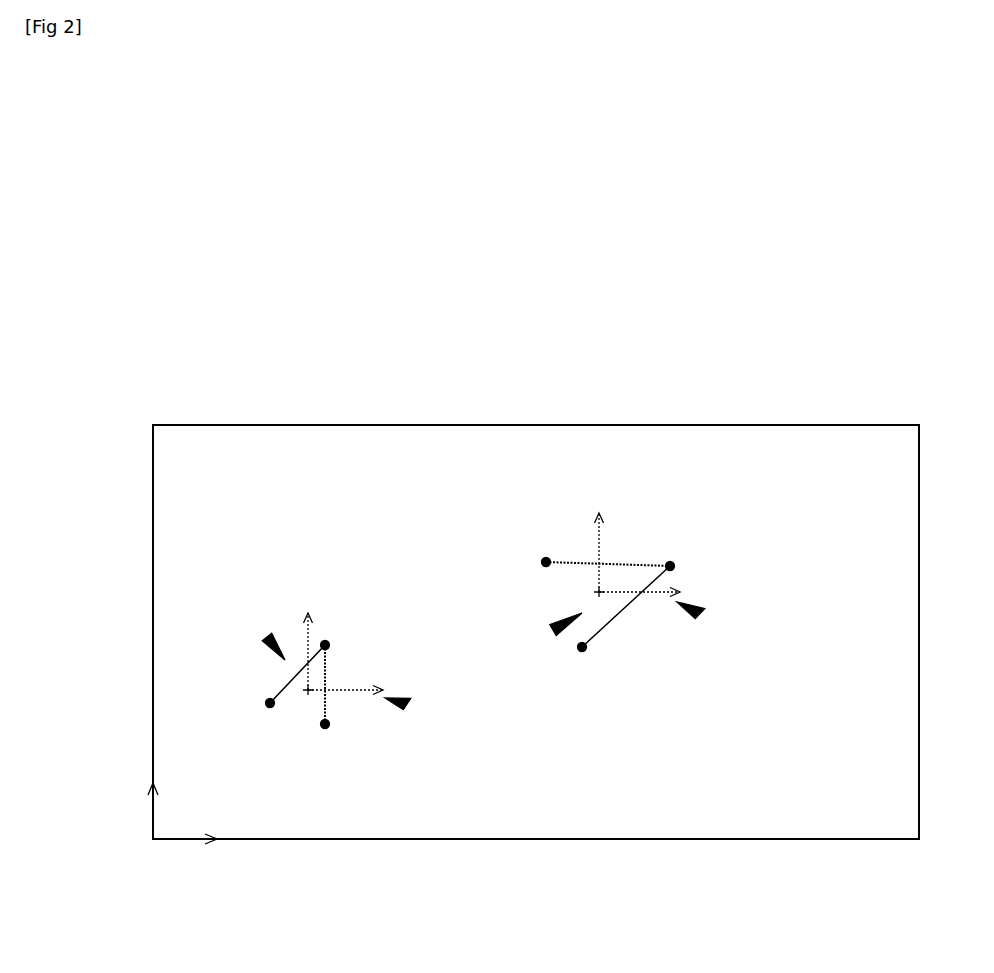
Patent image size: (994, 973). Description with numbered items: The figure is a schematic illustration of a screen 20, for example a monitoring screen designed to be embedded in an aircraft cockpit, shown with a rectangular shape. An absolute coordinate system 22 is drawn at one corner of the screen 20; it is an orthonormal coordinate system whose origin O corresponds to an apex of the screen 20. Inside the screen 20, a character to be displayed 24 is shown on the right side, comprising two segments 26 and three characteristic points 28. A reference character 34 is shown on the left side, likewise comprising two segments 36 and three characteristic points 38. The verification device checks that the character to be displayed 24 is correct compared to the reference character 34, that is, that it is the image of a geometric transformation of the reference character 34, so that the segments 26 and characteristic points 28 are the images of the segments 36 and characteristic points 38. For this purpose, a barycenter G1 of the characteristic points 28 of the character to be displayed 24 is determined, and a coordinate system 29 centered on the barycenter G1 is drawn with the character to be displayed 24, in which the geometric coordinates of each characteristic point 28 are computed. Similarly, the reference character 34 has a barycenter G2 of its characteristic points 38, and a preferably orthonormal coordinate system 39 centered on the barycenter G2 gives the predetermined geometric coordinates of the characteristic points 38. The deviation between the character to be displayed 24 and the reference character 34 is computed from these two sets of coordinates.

The screen 20 is at (812, 425).
The absolute coordinate system 22 is at (188, 887).
The character to be displayed 24 is at (553, 630).
The segments 26 is at (628, 560).
The characteristic points 28 is at (546, 562).
The coordinate system 29 is at (700, 627).
The reference character 34 is at (267, 637).
The segments 36 is at (292, 680).
The characteristic points 38 is at (327, 641).
The coordinate system 39 is at (407, 713).
The barycenter G1 is at (308, 693).
The barycenter G2 is at (599, 592).